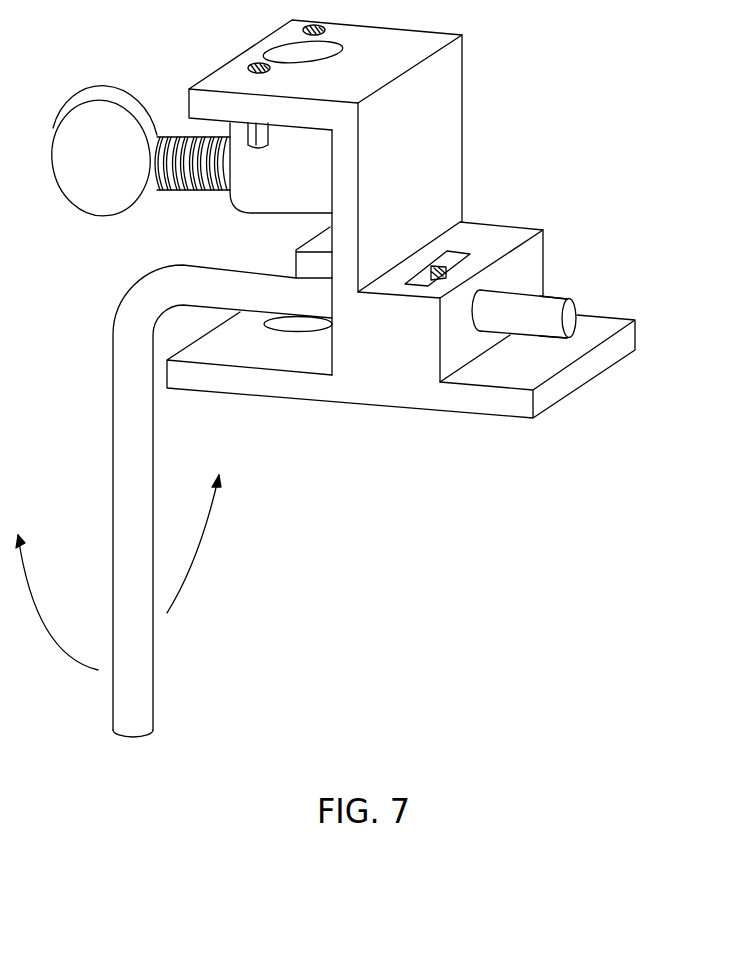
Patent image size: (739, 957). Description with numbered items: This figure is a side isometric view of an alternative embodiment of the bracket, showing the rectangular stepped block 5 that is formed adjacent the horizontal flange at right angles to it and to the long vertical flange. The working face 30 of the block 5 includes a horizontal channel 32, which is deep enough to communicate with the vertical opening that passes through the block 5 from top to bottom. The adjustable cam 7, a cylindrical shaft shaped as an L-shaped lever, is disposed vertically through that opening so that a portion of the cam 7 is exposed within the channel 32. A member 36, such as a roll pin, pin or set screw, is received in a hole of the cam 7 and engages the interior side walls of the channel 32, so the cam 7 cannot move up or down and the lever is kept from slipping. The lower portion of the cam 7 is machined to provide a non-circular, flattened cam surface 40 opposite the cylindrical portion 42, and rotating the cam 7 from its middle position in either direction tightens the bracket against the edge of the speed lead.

The stepped block 5 is at (373, 360).
The working face 30 is at (524, 232).
The horizontal channel 32 is at (457, 255).
The member 36 is at (440, 265).
The cam surface 40 is at (525, 335).
The cylindrical portion 42 is at (552, 300).
The adjustable cam 7 is at (572, 312).